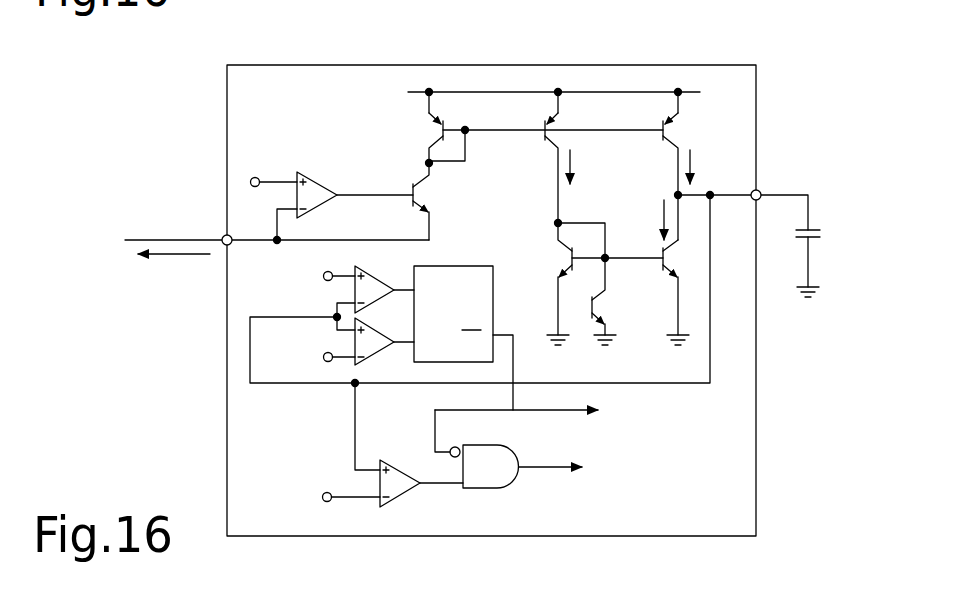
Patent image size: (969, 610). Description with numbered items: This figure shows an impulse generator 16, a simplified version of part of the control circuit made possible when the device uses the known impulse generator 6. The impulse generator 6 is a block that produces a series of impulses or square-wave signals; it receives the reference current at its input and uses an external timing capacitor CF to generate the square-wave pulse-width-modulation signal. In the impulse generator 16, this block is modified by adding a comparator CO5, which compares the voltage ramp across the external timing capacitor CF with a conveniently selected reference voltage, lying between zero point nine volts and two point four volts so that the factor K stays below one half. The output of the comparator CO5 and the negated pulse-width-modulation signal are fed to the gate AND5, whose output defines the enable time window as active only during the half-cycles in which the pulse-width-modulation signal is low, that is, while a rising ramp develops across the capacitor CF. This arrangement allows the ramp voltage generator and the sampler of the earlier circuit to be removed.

The impulse generator 16 is at (417, 62).
The impulse generator 6 is at (376, 154).
The comparator CO5 is at (417, 497).
The gate AND5 is at (518, 485).
The external timing capacitor CF is at (828, 256).